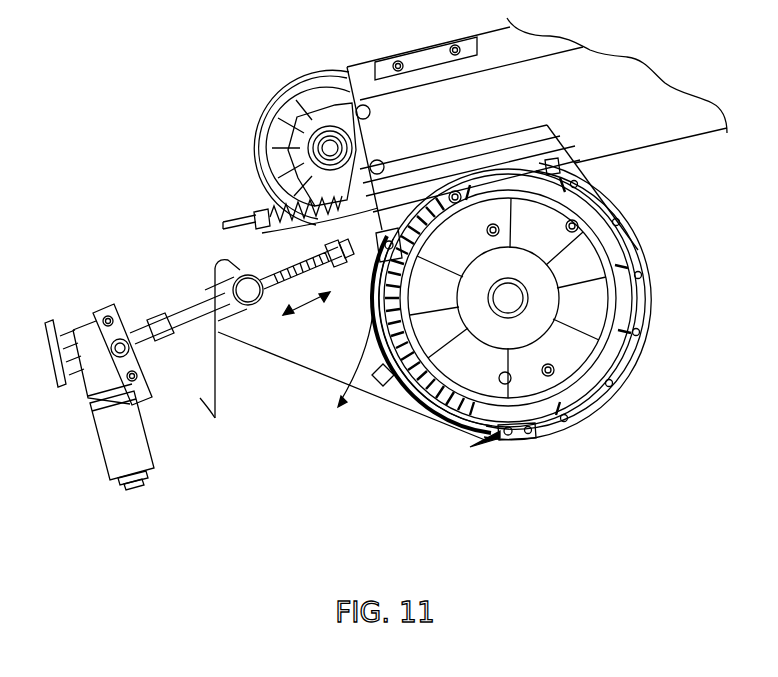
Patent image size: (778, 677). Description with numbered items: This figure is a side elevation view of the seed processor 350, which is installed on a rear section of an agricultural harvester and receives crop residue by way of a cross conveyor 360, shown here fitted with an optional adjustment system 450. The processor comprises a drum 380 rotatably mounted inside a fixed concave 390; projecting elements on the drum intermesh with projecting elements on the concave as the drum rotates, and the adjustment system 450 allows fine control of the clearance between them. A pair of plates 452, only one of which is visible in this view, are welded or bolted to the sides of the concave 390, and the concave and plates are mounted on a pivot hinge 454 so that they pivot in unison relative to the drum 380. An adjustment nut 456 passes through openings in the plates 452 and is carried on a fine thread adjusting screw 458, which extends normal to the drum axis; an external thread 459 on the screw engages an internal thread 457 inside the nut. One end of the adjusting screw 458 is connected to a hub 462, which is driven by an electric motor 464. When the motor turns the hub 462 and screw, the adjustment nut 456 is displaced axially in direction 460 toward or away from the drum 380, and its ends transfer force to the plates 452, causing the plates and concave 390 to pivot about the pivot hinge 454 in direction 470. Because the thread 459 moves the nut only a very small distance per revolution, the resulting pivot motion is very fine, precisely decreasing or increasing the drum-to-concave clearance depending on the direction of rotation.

The seed processor 350 is at (590, 417).
The cross conveyor 360 is at (537, 333).
The drum 380 is at (578, 305).
The concave 390 is at (427, 402).
The adjustment system 450 is at (208, 274).
The plates 452 is at (293, 345).
The pivot hinge 454 is at (517, 440).
The adjustment nut 456 is at (238, 280).
The internal thread 457 is at (272, 300).
The adjusting screw 458 is at (233, 292).
The external thread 459 is at (316, 258).
The direction 460 is at (307, 300).
The hub 462 is at (157, 358).
The electric motor 464 is at (90, 436).
The direction 470 is at (348, 358).